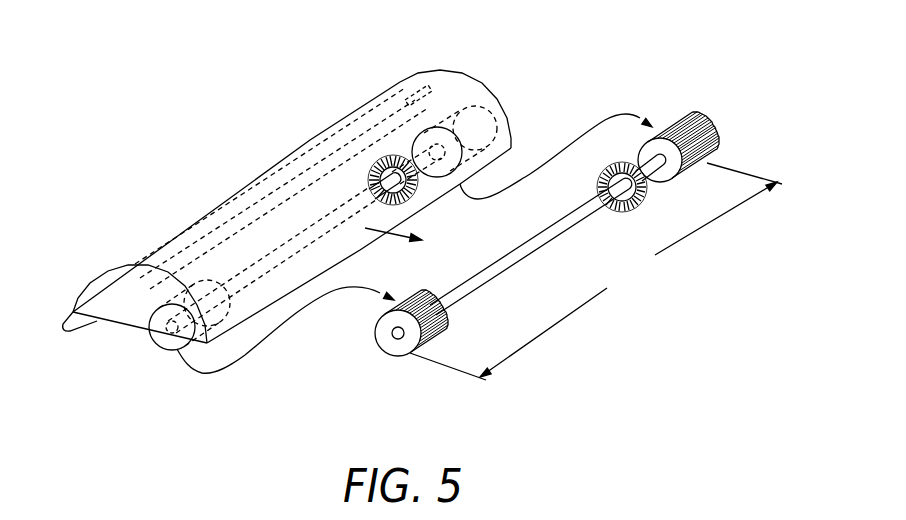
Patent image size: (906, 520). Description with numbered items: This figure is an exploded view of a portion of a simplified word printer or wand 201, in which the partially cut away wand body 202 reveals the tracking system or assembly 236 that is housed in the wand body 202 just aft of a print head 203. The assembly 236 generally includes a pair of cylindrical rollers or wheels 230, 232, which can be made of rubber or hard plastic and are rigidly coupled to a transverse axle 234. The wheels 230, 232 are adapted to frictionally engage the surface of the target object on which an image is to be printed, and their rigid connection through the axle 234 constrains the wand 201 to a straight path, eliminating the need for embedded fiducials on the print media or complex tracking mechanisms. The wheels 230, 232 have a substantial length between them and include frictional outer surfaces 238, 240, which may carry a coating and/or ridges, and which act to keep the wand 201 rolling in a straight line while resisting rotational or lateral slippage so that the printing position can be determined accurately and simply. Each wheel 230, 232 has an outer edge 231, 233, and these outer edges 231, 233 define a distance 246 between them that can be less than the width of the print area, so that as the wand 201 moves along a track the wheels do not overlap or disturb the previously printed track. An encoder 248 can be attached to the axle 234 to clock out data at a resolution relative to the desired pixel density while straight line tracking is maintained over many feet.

The word printer or wand 201 is at (378, 84).
The wand body 202 is at (452, 72).
The print head 203 is at (67, 327).
The cylindrical roller or wheel 230 is at (163, 342).
The outer edge 231 is at (173, 352).
The cylindrical roller or wheel 232 is at (493, 123).
The outer edge 233 is at (477, 108).
The transverse axle 234 is at (538, 235).
The tracking system or assembly 236 is at (635, 302).
The frictional outer surface 238 is at (427, 288).
The frictional outer surface 240 is at (708, 122).
The distance 246 is at (596, 271).
The encoder 248 is at (373, 164).